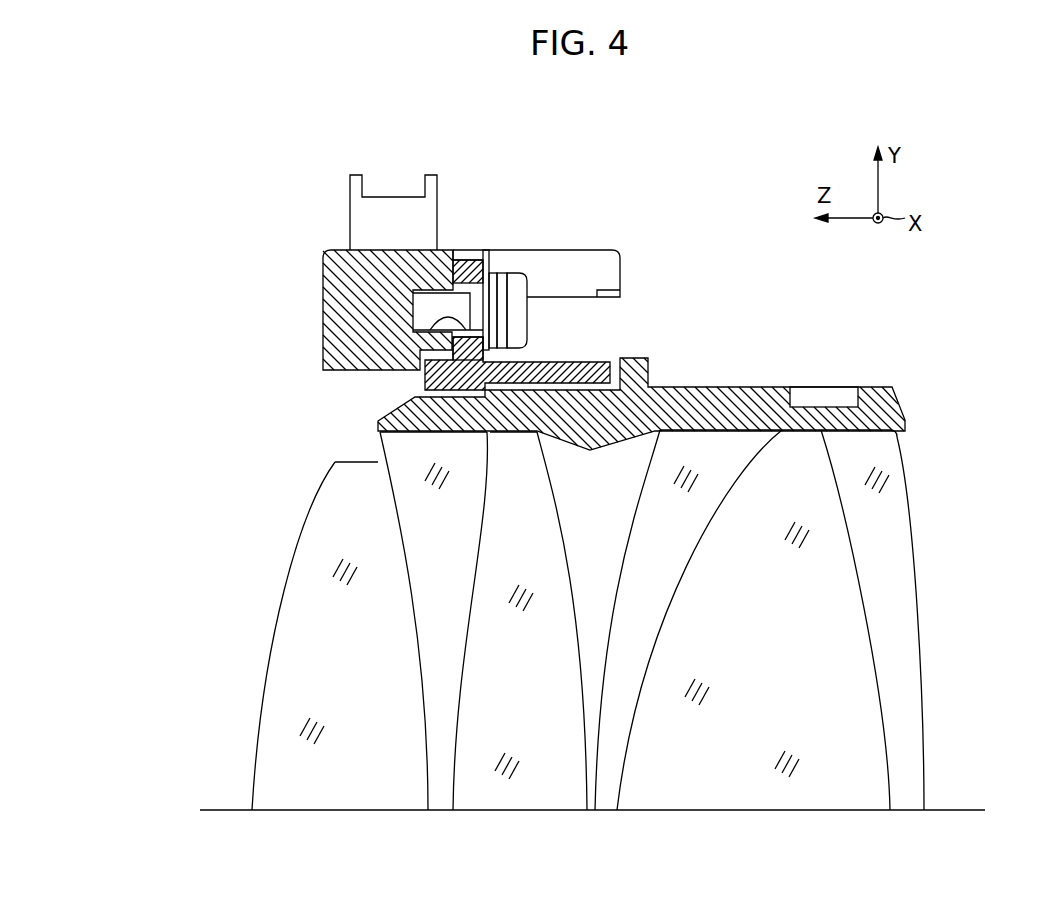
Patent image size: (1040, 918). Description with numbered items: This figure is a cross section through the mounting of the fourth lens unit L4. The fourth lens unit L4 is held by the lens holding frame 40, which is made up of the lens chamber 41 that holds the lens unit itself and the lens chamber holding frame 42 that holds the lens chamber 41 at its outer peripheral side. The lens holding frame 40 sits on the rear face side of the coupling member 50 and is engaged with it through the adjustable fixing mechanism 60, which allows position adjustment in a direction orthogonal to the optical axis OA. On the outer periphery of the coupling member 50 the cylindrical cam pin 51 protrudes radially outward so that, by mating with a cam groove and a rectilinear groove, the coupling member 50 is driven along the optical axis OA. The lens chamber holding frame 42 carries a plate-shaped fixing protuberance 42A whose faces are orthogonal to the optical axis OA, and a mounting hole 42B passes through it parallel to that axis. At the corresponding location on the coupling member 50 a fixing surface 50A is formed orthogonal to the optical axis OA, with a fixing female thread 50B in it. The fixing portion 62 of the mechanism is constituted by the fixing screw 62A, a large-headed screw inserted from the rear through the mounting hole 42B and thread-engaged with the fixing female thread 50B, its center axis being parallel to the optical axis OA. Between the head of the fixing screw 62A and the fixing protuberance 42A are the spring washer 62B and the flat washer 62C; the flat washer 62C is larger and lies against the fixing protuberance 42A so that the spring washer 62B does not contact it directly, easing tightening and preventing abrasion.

The lens holding frame 40 is at (727, 302).
The lens chamber 41 is at (717, 387).
The lens chamber holding frame 42 is at (593, 362).
The fixing protuberance 42A is at (485, 270).
The mounting hole 42B is at (457, 318).
The coupling member 50 is at (323, 273).
The fixing surface 50A is at (463, 258).
The fixing female thread 50B is at (437, 297).
The cam pin 51 is at (349, 207).
The adjustable fixing mechanism 60 is at (574, 254).
The fixing portion 62 is at (656, 223).
The fixing screw 62A is at (530, 287).
The spring washer 62B is at (507, 277).
The flat washer 62C is at (497, 277).
The fourth lens unit L4 is at (243, 653).
The optical axis OA is at (968, 810).